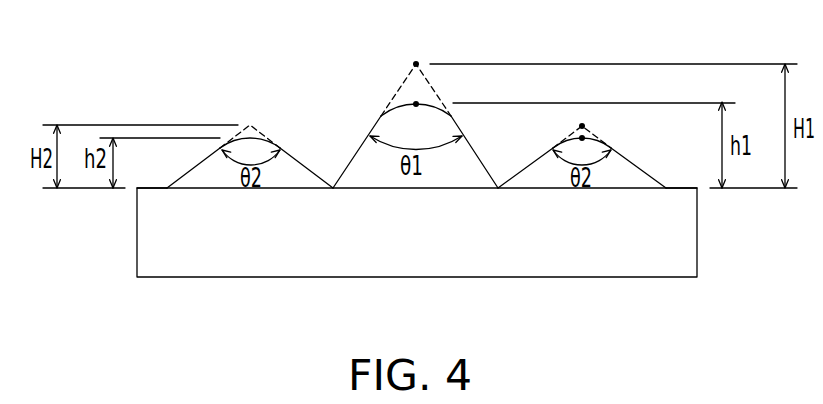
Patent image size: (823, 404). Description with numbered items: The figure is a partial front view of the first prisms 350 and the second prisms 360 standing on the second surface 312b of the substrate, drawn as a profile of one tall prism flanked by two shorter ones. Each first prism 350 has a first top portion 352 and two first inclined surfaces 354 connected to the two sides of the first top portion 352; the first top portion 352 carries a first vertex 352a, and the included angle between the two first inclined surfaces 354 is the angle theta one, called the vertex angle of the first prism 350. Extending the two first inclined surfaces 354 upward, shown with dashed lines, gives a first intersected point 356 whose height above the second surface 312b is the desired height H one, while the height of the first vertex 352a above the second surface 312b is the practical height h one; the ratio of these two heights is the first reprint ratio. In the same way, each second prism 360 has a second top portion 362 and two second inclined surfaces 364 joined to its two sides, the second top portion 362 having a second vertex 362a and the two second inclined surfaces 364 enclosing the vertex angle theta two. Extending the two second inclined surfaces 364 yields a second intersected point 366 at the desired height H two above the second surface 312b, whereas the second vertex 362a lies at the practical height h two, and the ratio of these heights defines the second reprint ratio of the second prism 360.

The second surface 312b is at (160, 186).
The first prism 350 is at (420, 147).
The first top portion 352 is at (409, 103).
The first vertex 352a is at (418, 103).
The first inclined surfaces 354 is at (364, 142).
The first intersected point 356 is at (390, 100).
The second prism 360 is at (440, 107).
The second top portion 362 is at (598, 139).
The second vertex 362a is at (583, 137).
The second inclined surfaces 364 is at (545, 152).
The second intersected point 366 is at (581, 124).